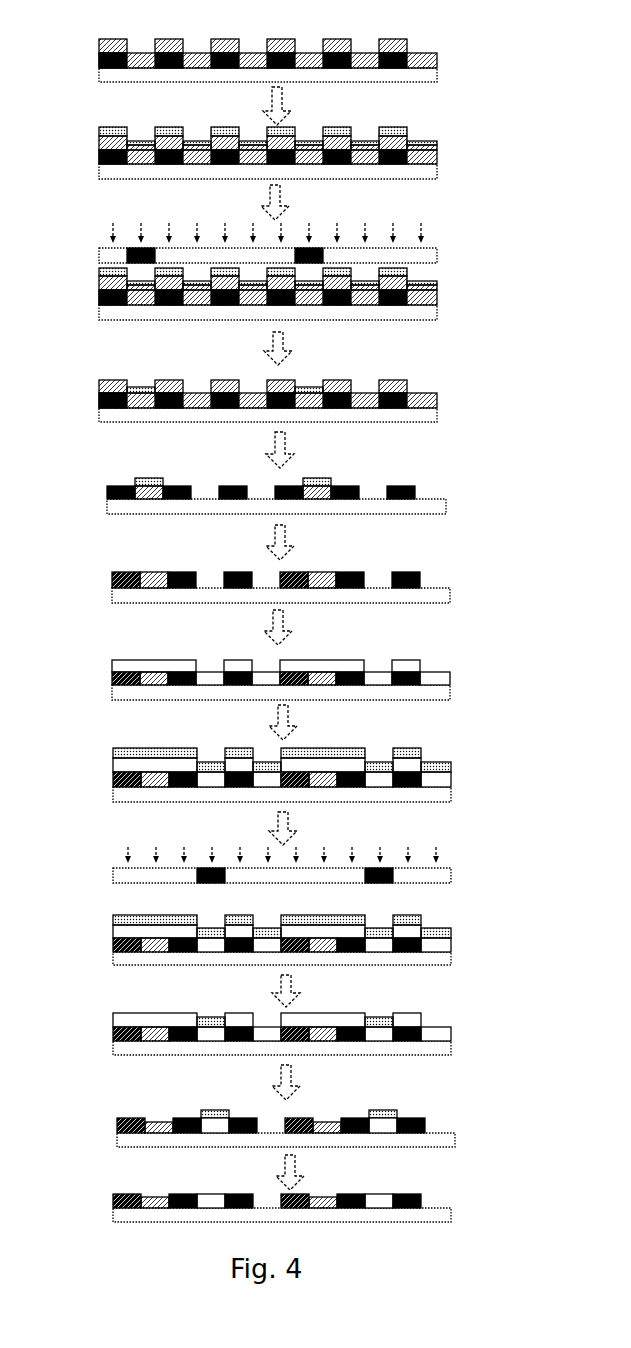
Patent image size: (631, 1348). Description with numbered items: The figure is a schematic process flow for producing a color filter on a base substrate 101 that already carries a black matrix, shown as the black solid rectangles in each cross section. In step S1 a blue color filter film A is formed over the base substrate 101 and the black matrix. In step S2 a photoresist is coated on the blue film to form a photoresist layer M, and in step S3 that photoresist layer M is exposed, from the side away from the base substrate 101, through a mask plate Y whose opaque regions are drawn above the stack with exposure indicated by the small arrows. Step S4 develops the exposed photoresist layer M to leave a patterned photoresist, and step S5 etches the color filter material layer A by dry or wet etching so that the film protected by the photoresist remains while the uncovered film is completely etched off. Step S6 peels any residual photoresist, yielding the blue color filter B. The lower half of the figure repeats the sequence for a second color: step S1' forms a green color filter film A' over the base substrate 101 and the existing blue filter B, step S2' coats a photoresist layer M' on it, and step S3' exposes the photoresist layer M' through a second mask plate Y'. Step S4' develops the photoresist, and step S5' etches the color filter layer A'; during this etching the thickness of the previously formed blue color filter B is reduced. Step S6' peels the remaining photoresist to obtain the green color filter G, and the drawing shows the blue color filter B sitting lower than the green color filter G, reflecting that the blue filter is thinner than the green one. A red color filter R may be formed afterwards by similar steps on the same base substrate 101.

The base substrate 101 is at (471, 1216).
The blue color filter film A is at (283, 223).
The photoresist layer M is at (283, 306).
The mask plate Y is at (282, 243).
The red color filter R is at (320, 580).
The green color filter film A' is at (295, 843).
The photoresist layer M' is at (296, 930).
The mask plate Y' is at (299, 865).
The blue color filter B is at (150, 1197).
The green color filter G is at (212, 1194).
The step of forming blue color filter film S1 is at (223, 49).
The step of coating photoresist S2 is at (223, 141).
The step of exposing photoresist S3 is at (223, 281).
The step of developing photoresist S4 is at (223, 387).
The step of etching color filter material layer S5 is at (228, 478).
The step of peeling photoresist S6 is at (230, 568).
The step of forming green color filter film S1' is at (232, 670).
The step of coating photoresist S2' is at (232, 770).
The step of exposing photoresist S3' is at (232, 925).
The step of developing photoresist S4' is at (232, 1019).
The step of etching color filter layer S5' is at (234, 1112).
The step of peeling photoresist S6' is at (231, 1187).